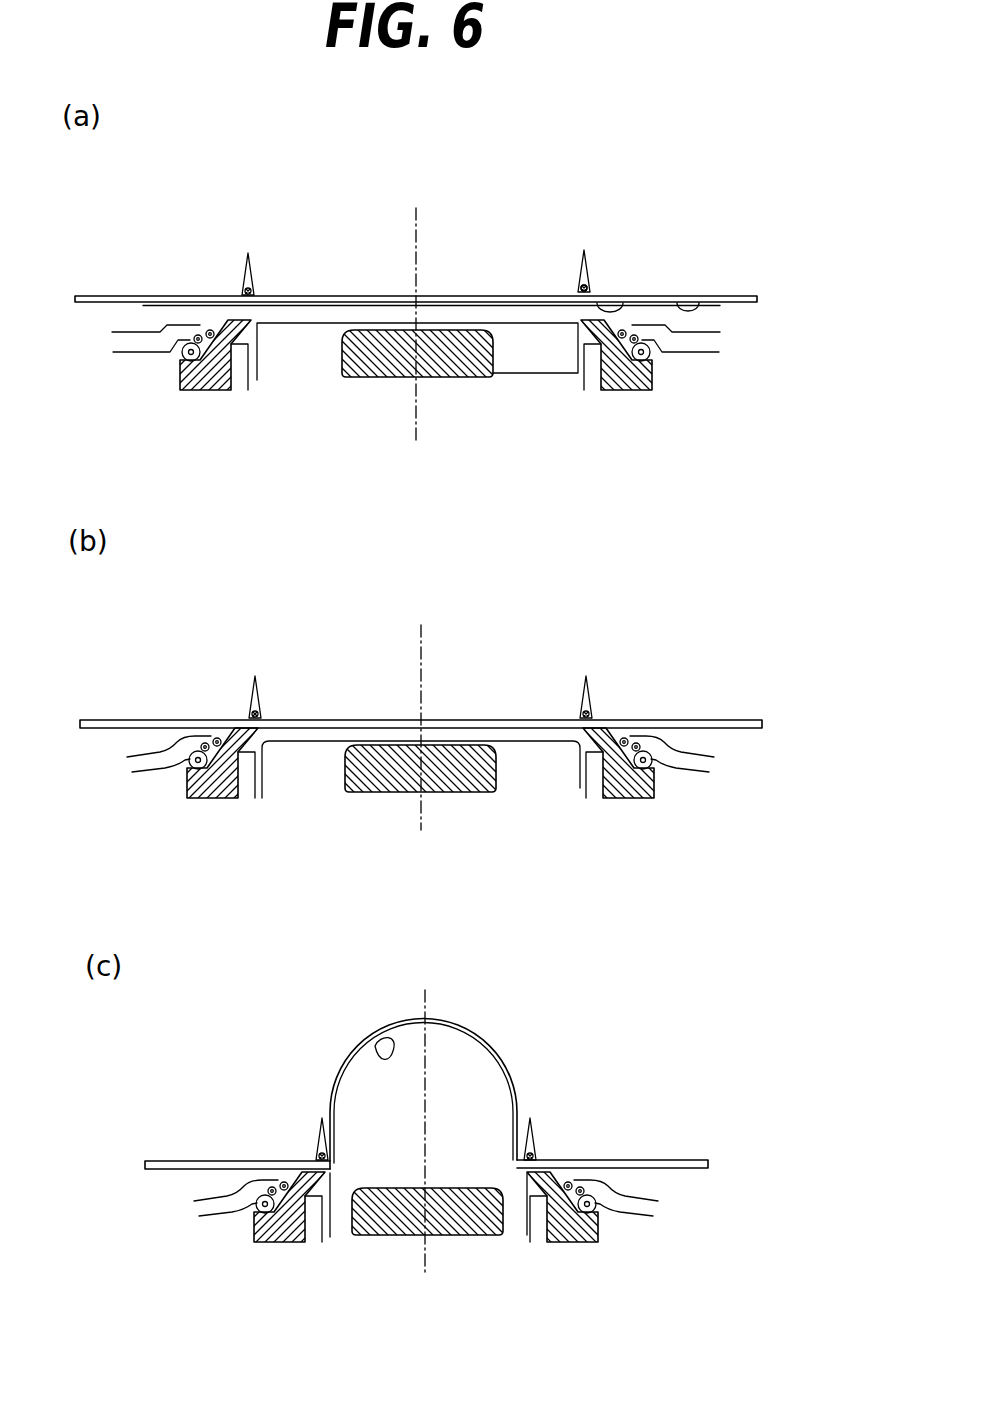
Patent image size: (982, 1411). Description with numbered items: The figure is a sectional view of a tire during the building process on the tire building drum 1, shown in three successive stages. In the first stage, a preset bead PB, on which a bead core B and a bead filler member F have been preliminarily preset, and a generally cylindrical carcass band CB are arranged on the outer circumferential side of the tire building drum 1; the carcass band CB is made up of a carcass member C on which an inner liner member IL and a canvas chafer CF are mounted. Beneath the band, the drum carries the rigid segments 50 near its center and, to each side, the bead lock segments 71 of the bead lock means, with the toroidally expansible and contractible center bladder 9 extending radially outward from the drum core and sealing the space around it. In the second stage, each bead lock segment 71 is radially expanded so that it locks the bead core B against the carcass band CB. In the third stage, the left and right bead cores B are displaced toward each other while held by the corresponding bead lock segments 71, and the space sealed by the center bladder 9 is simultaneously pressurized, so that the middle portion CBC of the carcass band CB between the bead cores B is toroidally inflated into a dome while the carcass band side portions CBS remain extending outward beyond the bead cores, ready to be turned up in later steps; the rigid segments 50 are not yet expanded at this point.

The tire building drum 1 is at (421, 305).
The center bladder 9 is at (296, 322).
The rigid segment 50 is at (365, 367).
The bead lock segment 71 is at (624, 388).
The preset bead PB is at (580, 200).
The bead core B is at (578, 288).
The bead filler member F is at (577, 283).
The carcass member C is at (733, 292).
The carcass band CB is at (353, 276).
The carcass band side portion CBS is at (123, 718).
The middle portion of the carcass band CBC is at (445, 716).
The canvas chafer CF is at (623, 302).
The inner liner member IL is at (697, 297).